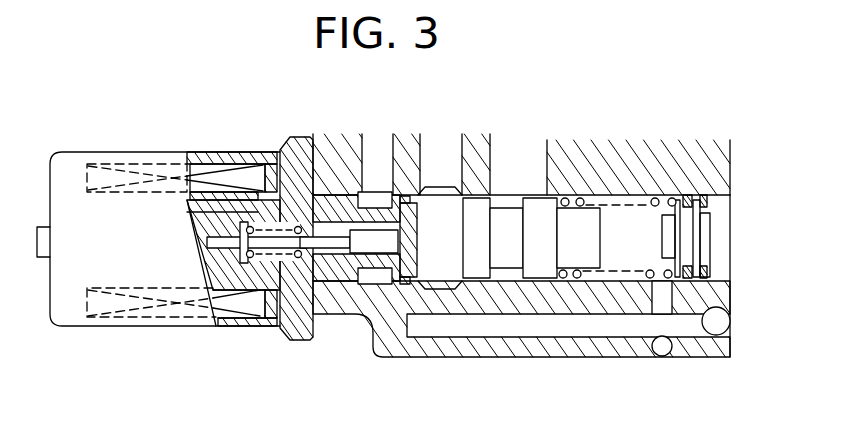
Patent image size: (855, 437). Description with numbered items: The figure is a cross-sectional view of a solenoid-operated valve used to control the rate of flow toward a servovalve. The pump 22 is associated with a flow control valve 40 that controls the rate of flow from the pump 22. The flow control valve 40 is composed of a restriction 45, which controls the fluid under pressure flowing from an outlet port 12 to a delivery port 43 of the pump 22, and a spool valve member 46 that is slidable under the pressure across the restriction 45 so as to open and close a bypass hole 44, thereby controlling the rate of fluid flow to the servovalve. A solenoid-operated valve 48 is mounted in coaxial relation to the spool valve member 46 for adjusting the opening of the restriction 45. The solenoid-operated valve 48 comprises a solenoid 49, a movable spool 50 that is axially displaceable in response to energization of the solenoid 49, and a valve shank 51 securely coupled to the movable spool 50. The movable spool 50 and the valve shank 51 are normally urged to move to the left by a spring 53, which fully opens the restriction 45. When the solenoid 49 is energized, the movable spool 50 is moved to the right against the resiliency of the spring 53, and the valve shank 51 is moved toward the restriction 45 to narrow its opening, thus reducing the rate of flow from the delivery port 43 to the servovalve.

The outlet port 12 is at (453, 156).
The pump 22 is at (523, 346).
The flow control valve 40 is at (333, 324).
The delivery port 43 is at (364, 162).
The bypass hole 44 is at (548, 158).
The restriction 45 is at (407, 243).
The spool valve member 46 is at (477, 268).
The solenoid-operated valve 48 is at (162, 150).
The solenoid 49 is at (245, 300).
The movable spool 50 is at (217, 220).
The valve shank 51 is at (340, 236).
The spring 53 is at (282, 220).